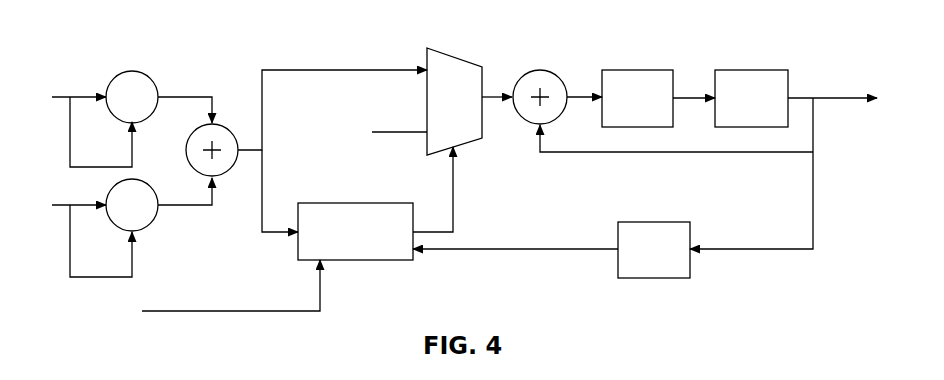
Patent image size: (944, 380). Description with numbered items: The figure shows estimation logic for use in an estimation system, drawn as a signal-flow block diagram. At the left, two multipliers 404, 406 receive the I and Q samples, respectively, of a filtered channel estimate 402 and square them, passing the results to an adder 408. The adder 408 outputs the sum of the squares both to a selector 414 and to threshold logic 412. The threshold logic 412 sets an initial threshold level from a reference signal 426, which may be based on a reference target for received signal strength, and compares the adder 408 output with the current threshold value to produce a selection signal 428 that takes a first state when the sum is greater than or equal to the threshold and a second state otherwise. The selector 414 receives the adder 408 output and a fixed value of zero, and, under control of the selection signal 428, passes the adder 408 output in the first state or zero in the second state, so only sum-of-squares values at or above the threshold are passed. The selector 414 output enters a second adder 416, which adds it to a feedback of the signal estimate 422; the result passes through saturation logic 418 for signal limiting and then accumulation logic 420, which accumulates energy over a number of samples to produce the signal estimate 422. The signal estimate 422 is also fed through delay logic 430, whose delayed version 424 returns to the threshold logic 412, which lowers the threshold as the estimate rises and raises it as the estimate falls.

The filtered channel estimate 402 is at (56, 52).
The multiplier 404 is at (137, 71).
The multiplier 406 is at (150, 228).
The adder 408 is at (225, 124).
The threshold logic 412 is at (382, 260).
The selector 414 is at (466, 142).
The adder 416 is at (531, 70).
The saturation logic 418 is at (641, 70).
The accumulation logic 420 is at (752, 70).
The signal estimate 422 is at (835, 98).
The delayed version of the signal estimate 424 is at (538, 249).
The reference signal 426 is at (240, 311).
The selection signal 428 is at (453, 195).
The delay logic 430 is at (676, 278).